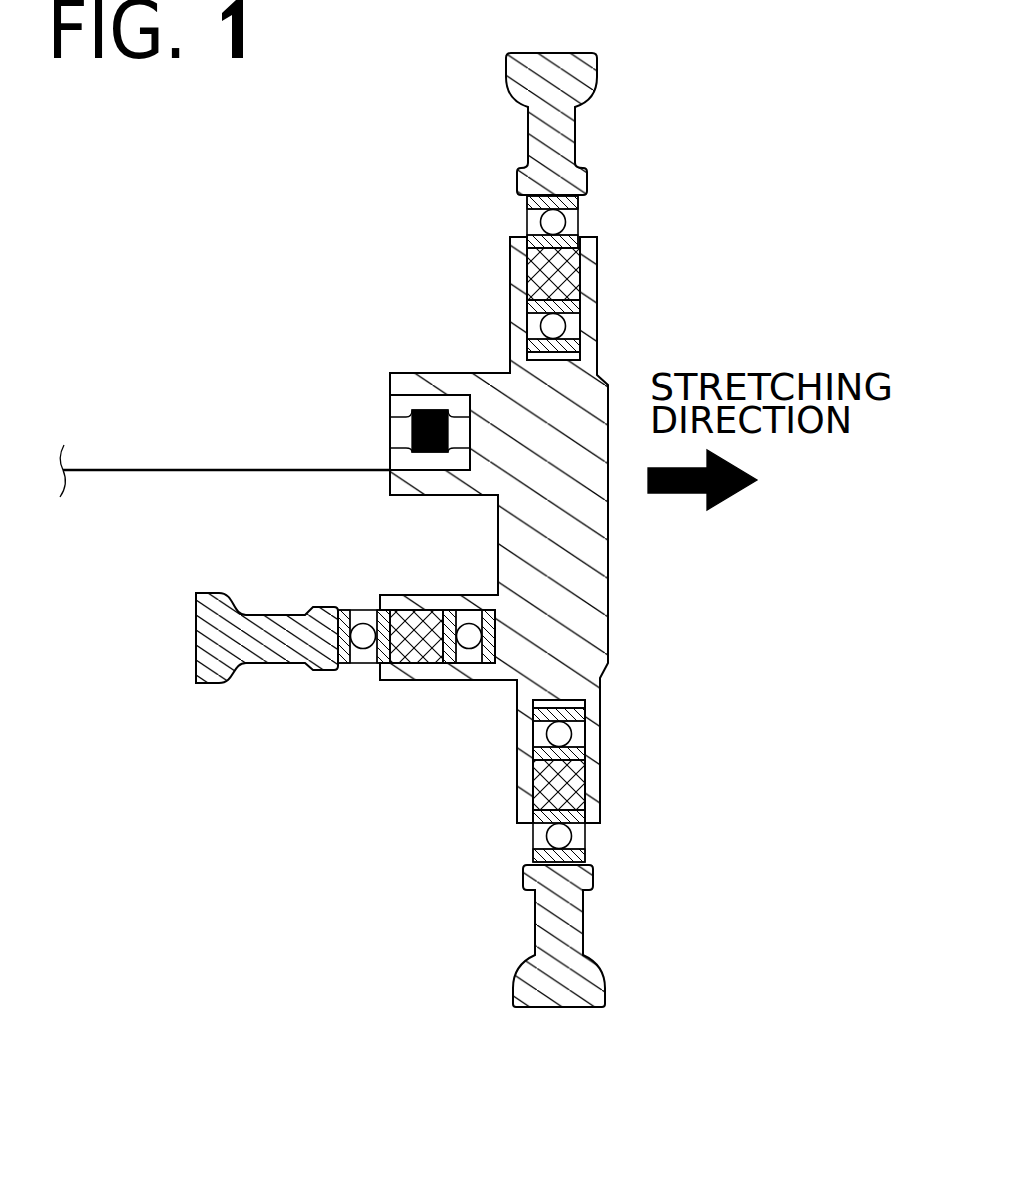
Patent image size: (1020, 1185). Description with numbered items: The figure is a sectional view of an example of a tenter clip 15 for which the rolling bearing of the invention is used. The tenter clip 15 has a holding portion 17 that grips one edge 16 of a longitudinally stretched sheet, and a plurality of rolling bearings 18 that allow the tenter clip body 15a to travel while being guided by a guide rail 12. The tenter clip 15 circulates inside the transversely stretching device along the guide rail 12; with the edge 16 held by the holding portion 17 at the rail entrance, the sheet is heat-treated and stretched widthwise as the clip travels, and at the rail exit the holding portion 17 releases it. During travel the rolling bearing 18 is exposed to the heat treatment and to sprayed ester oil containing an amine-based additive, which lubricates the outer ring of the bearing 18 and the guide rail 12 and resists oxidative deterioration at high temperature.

The guide rail 12 is at (563, 112).
The tenter clip 15 is at (670, 292).
The tenter clip body 15a is at (587, 565).
The one edge of a sheet 16 is at (227, 470).
The holding portion 17 is at (391, 404).
The rolling bearing 18 is at (727, 768).